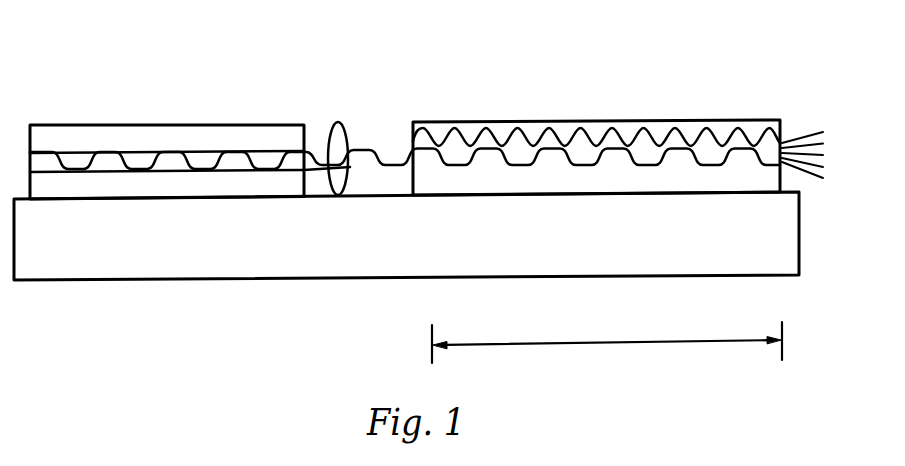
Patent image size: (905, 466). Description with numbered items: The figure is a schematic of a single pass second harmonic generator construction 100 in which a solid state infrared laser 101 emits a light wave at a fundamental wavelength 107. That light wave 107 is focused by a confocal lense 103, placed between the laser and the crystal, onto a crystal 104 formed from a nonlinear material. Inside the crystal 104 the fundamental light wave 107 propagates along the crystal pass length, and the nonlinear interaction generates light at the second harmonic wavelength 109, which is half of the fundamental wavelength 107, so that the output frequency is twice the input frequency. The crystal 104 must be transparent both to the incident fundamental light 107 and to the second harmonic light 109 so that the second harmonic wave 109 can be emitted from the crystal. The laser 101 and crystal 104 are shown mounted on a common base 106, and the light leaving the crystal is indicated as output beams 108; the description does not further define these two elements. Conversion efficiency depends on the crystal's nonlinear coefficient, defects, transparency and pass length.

The single pass second harmonic generator construction 100 is at (62, 75).
The solid state infrared laser 101 is at (141, 114).
The confocal lense 103 is at (337, 122).
The crystal 104 is at (635, 120).
The substrate 106 is at (799, 229).
The fundamental wavelength 107 is at (505, 156).
The output light beams 108 is at (820, 115).
The second harmonic wavelength 109 is at (482, 124).